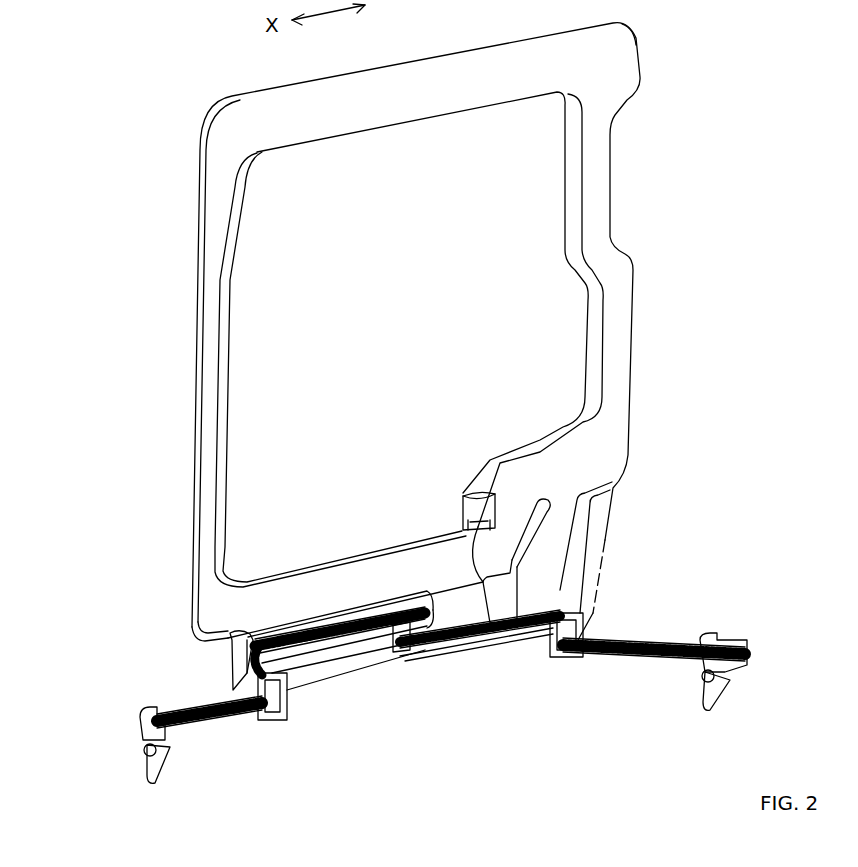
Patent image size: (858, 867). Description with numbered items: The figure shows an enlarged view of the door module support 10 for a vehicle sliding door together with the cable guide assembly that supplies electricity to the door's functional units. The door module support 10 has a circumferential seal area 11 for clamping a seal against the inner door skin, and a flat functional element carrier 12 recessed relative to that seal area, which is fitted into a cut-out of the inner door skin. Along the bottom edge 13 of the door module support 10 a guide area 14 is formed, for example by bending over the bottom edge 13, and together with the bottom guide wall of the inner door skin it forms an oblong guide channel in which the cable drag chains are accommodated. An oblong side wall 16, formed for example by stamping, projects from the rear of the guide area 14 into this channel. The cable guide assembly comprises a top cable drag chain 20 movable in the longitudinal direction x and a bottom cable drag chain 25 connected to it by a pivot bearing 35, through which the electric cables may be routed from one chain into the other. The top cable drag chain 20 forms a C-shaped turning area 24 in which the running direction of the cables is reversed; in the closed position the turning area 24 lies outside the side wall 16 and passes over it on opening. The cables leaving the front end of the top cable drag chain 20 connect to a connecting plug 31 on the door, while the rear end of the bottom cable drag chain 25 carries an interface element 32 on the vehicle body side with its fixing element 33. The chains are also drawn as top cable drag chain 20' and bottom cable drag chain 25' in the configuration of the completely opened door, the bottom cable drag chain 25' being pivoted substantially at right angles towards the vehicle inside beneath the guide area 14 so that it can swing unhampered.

The door module support 10 is at (633, 28).
The circumferential seal area 11 is at (572, 178).
The flat functional element carrier 12 is at (273, 257).
The bottom edge 13 is at (580, 477).
The guide area 14 is at (617, 567).
The oblong side wall 16 is at (330, 653).
The top cable drag chain 20 is at (271, 630).
The top cable drag chain 20' is at (476, 662).
The turning area 24 is at (243, 658).
The bottom cable drag chain 25 is at (207, 699).
The bottom cable drag chain 25' is at (661, 627).
The connecting plug 31 is at (460, 495).
The interface element 32 is at (142, 715).
The fixing element 33 is at (155, 745).
The pivot bearing 35 is at (273, 717).